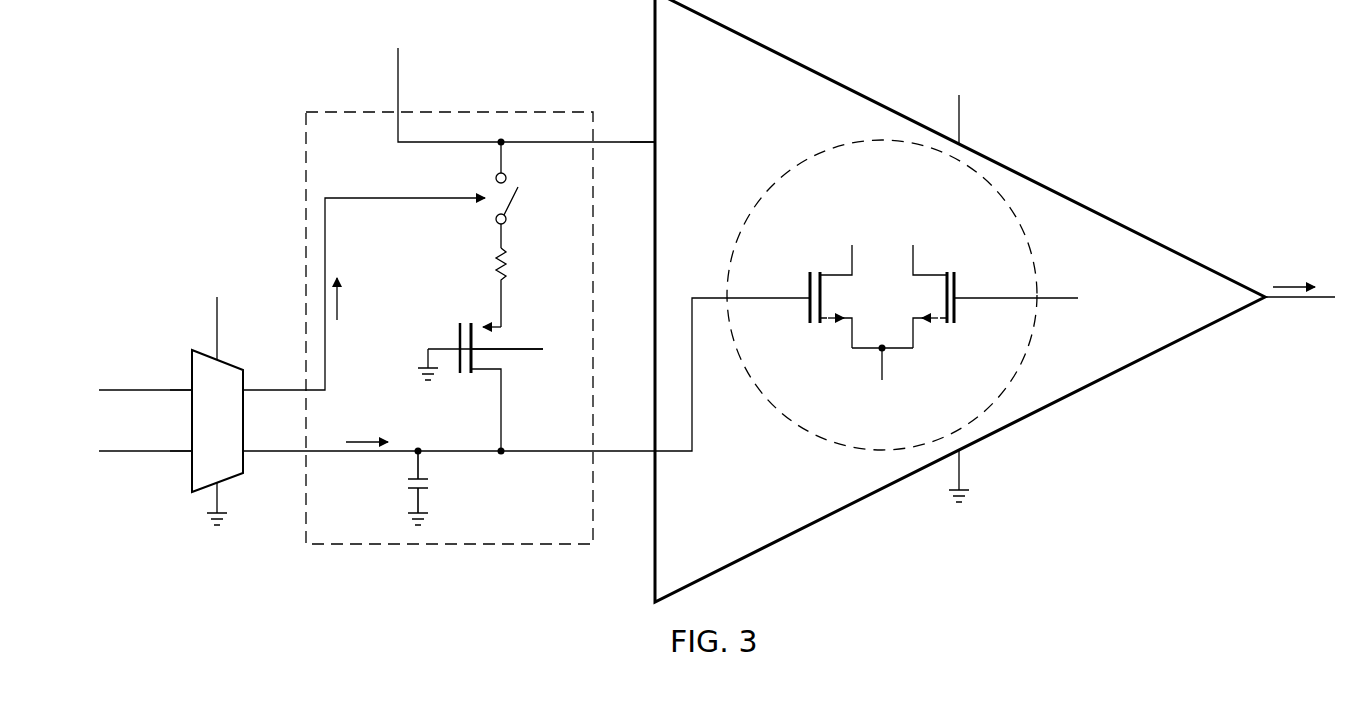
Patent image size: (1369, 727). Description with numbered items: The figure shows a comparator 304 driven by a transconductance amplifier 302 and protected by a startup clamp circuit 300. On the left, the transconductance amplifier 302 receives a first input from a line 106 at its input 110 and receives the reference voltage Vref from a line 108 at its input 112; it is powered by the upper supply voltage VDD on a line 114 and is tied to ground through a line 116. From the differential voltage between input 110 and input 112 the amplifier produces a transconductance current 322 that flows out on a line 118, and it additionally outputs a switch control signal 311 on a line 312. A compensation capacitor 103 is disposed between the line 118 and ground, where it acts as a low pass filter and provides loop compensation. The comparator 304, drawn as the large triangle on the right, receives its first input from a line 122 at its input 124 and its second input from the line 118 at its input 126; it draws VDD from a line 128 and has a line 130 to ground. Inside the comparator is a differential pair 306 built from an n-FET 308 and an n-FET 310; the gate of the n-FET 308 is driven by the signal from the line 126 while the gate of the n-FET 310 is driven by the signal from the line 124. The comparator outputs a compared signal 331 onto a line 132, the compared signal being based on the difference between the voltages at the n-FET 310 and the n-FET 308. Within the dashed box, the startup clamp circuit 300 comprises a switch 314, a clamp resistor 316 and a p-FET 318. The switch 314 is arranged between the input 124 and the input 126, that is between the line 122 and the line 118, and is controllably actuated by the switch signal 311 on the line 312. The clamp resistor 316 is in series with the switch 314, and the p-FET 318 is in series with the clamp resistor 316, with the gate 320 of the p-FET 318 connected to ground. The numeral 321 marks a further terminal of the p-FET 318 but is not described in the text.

The compensation capacitor 103 is at (407, 481).
The line 106 is at (125, 388).
The line 108 is at (125, 453).
The input 110 is at (187, 388).
The input 112 is at (187, 453).
The line 114 is at (217, 318).
The line 116 is at (220, 498).
The line 118 is at (482, 454).
The line 122 is at (398, 80).
The input 124 is at (652, 140).
The input 126 is at (652, 453).
The line 128 is at (961, 126).
The line 130 is at (962, 466).
The line 132 is at (1298, 300).
The startup clamp circuit 300 is at (437, 549).
The transconductance amplifier 302 is at (226, 356).
The comparator 304 is at (753, 146).
The differential pair 306 is at (770, 416).
The n-FET 308 is at (808, 312).
The n-FET 310 is at (958, 312).
The switch control signal 311 is at (338, 298).
The line 312 is at (368, 197).
The switch 314 is at (513, 203).
The clamp resistor 316 is at (495, 263).
The p-FET 318 is at (500, 338).
The gate 320 is at (458, 333).
The transistor terminal 321 is at (520, 350).
The transconductance current 322 is at (368, 438).
The compared signal 331 is at (1295, 285).